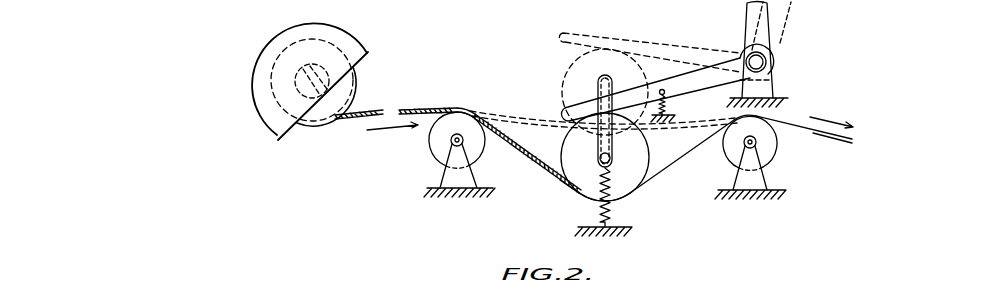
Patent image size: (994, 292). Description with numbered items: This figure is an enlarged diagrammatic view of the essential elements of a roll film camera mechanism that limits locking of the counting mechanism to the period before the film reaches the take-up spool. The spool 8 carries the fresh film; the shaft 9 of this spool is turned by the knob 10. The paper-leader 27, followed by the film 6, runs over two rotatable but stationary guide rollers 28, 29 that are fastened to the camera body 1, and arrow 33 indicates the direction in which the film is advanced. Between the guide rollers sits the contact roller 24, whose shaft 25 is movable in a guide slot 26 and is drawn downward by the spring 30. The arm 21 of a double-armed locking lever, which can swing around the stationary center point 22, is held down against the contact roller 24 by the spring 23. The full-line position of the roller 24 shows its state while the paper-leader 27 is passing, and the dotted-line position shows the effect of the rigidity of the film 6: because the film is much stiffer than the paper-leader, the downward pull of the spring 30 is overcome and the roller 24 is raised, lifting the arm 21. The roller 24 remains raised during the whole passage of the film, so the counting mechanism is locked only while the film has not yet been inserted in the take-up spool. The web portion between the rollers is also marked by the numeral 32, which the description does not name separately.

The camera body 1 is at (445, 196).
The film 6 is at (431, 111).
The spool 8 is at (351, 84).
The shaft 9 is at (296, 83).
The knob 10 is at (282, 135).
The arm of double-armed locking lever 21 is at (696, 82).
The stationary center point 22 is at (757, 62).
The spring 23 is at (666, 107).
The contact roller 24 is at (640, 189).
The shaft of contact roller 25 is at (558, 189).
The guide slot 26 is at (608, 74).
The paper-leader 27 is at (823, 134).
The guide roller 28 is at (440, 140).
The guide roller 29 is at (727, 146).
The spring 30 is at (600, 213).
The strip portion between rollers 32 is at (526, 146).
The arrow 33 is at (832, 117).